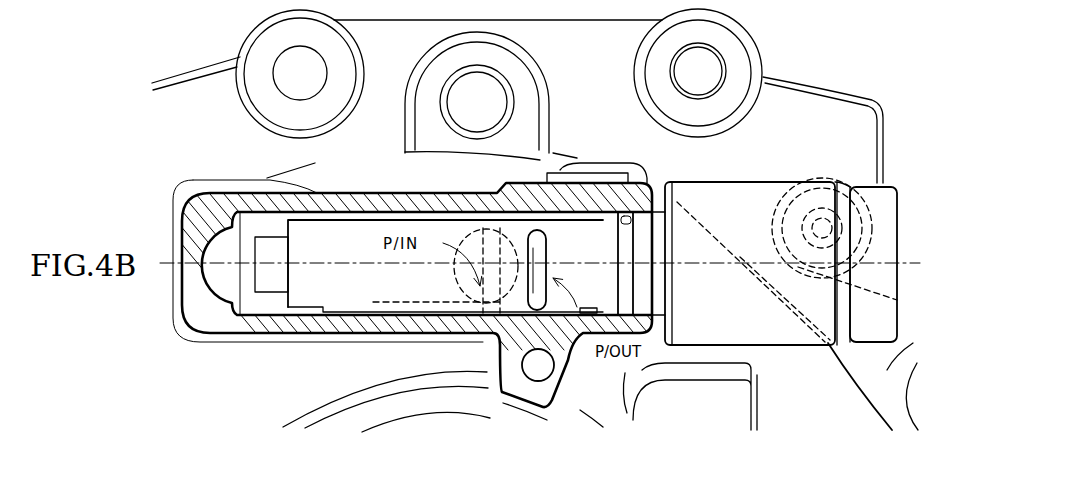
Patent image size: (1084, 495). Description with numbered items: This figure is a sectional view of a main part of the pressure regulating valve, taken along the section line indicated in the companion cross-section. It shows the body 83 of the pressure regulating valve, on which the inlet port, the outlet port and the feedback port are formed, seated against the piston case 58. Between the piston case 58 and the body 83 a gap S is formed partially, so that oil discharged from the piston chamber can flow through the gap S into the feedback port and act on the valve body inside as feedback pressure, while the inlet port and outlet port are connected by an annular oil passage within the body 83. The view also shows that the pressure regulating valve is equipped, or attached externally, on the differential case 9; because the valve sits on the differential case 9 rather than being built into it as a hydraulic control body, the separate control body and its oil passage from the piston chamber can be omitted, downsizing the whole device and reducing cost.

The differential case 9 is at (798, 122).
The piston case 58 is at (220, 210).
The body 83 is at (370, 225).
The gap S is at (400, 320).